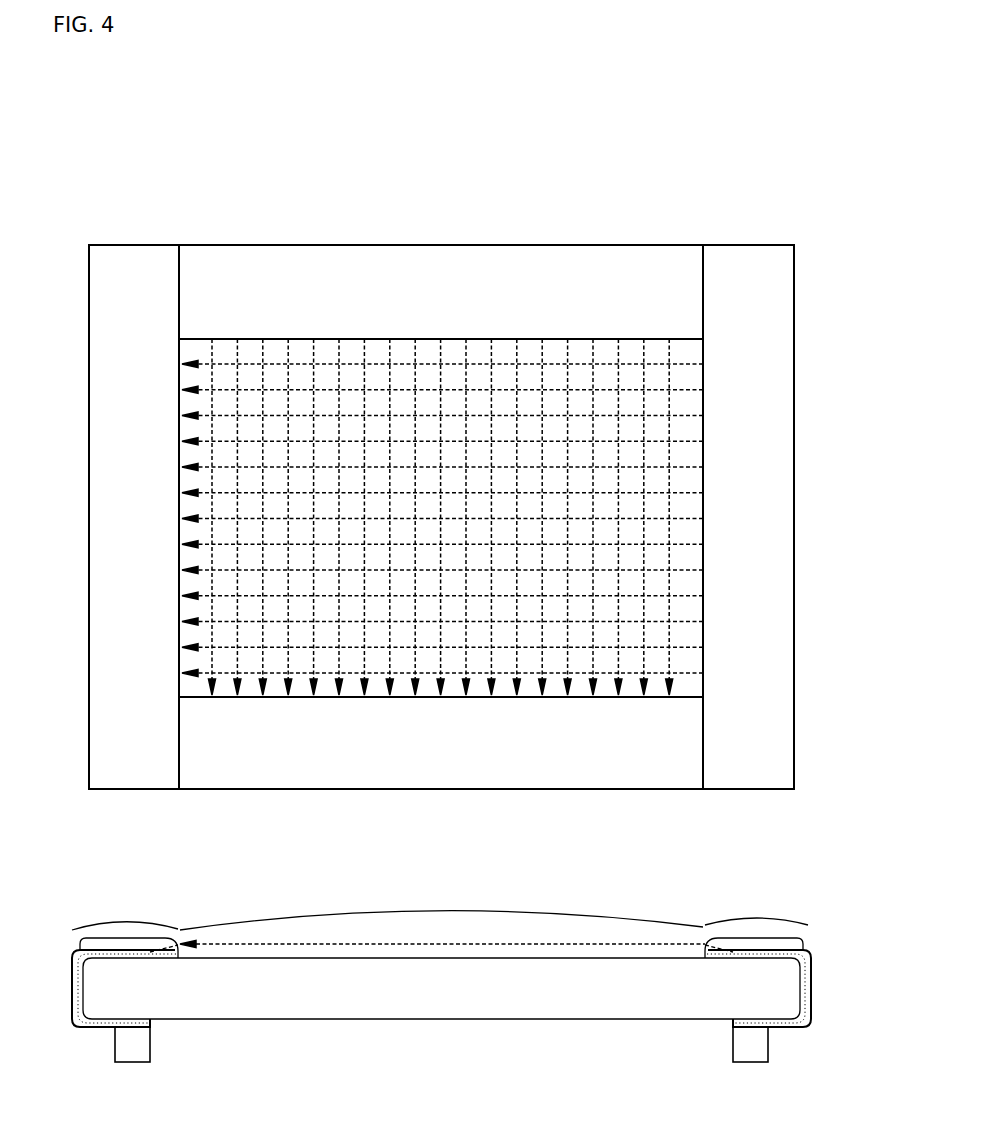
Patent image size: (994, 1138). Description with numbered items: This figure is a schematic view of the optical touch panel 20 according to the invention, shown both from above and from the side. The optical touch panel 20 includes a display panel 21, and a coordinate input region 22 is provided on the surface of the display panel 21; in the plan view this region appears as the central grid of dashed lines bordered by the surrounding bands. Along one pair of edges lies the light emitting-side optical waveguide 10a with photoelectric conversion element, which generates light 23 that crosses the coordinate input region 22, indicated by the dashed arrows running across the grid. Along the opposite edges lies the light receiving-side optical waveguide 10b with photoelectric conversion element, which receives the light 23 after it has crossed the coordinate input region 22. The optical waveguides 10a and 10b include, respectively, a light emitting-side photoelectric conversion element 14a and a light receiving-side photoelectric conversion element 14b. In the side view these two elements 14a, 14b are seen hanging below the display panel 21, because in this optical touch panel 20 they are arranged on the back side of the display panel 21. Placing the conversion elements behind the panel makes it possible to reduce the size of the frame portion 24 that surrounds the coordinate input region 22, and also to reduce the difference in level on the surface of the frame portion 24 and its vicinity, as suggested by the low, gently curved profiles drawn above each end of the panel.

The optical touch panel 20 is at (705, 151).
The light emitting-side optical waveguide with photoelectric conversion element 10a is at (282, 278).
The light receiving-side optical waveguide with photoelectric conversion element 10b is at (110, 455).
The display panel 21 is at (443, 993).
The coordinate input region 22 is at (430, 512).
The light 23 is at (520, 400).
The frame portion 24 is at (440, 908).
The light emitting-side photoelectric conversion element 14a is at (748, 1048).
The light receiving-side photoelectric conversion element 14b is at (133, 1050).